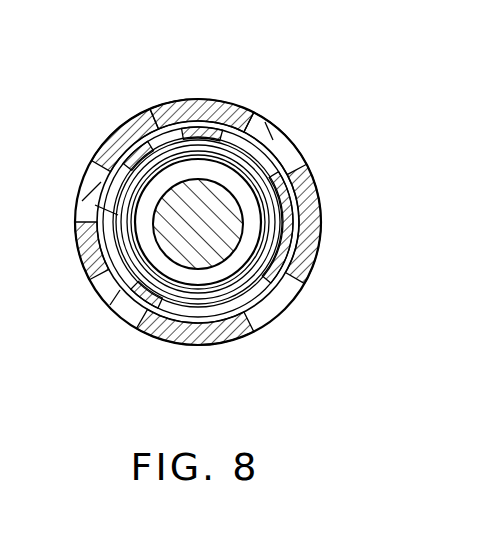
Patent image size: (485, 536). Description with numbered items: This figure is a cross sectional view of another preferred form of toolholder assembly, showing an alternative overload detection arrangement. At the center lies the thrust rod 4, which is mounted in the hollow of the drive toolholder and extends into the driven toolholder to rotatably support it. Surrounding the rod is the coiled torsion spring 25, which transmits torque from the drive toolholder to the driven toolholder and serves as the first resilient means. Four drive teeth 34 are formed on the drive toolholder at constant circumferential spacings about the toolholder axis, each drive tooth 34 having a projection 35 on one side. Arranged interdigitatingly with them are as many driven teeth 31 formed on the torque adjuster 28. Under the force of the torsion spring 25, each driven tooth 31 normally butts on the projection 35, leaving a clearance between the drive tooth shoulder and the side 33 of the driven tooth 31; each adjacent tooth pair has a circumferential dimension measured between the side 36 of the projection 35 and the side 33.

The thrust rod 4 is at (176, 254).
The coiled torsion spring 25 is at (268, 253).
The torque adjuster 28 is at (278, 196).
The driven teeth 31 is at (176, 110).
The side of driven tooth 33 is at (289, 161).
The drive teeth 34 is at (214, 96).
The projection 35 is at (233, 114).
The side of drive tooth projection 36 is at (270, 130).